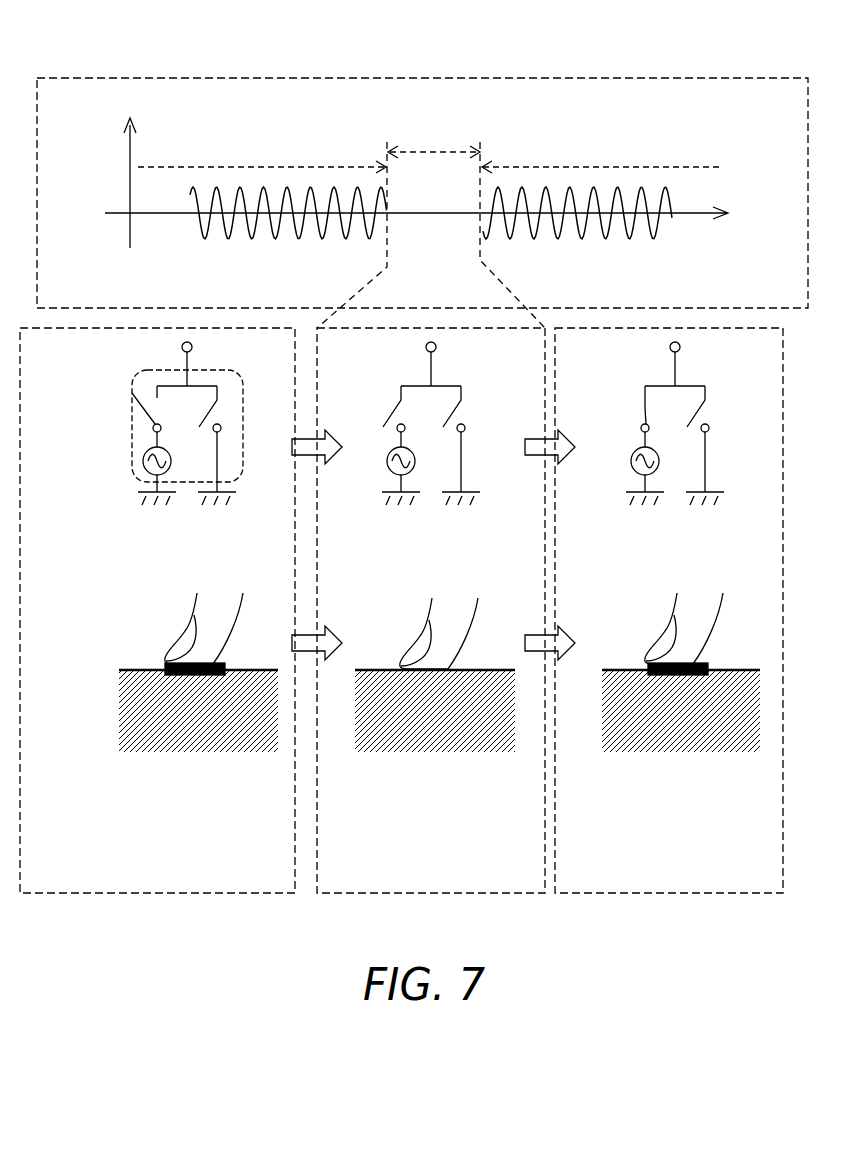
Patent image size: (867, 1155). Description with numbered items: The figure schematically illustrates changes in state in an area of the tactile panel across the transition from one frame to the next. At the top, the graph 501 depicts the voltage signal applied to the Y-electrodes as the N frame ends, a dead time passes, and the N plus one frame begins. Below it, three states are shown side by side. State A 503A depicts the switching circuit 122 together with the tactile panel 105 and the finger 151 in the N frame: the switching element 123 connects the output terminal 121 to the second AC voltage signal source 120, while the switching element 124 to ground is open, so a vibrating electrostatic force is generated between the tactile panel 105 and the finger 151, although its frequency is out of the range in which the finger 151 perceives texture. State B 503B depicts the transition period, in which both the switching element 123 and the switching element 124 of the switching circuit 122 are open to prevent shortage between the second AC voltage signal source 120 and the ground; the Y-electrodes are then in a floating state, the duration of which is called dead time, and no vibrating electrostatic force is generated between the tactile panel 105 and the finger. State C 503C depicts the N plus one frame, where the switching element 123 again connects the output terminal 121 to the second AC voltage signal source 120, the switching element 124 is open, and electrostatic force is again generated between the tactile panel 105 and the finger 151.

The graph 501 is at (197, 291).
The State A 503A is at (188, 888).
The State B 503B is at (473, 888).
The State C 503C is at (709, 888).
The second AC voltage signal source 120 is at (145, 452).
The output terminal 121 is at (182, 346).
The switching circuit 122 is at (180, 414).
The switching element 123 is at (132, 393).
The switching element 124 is at (212, 405).
The finger 151 is at (193, 620).
The tactile panel 105 is at (242, 669).